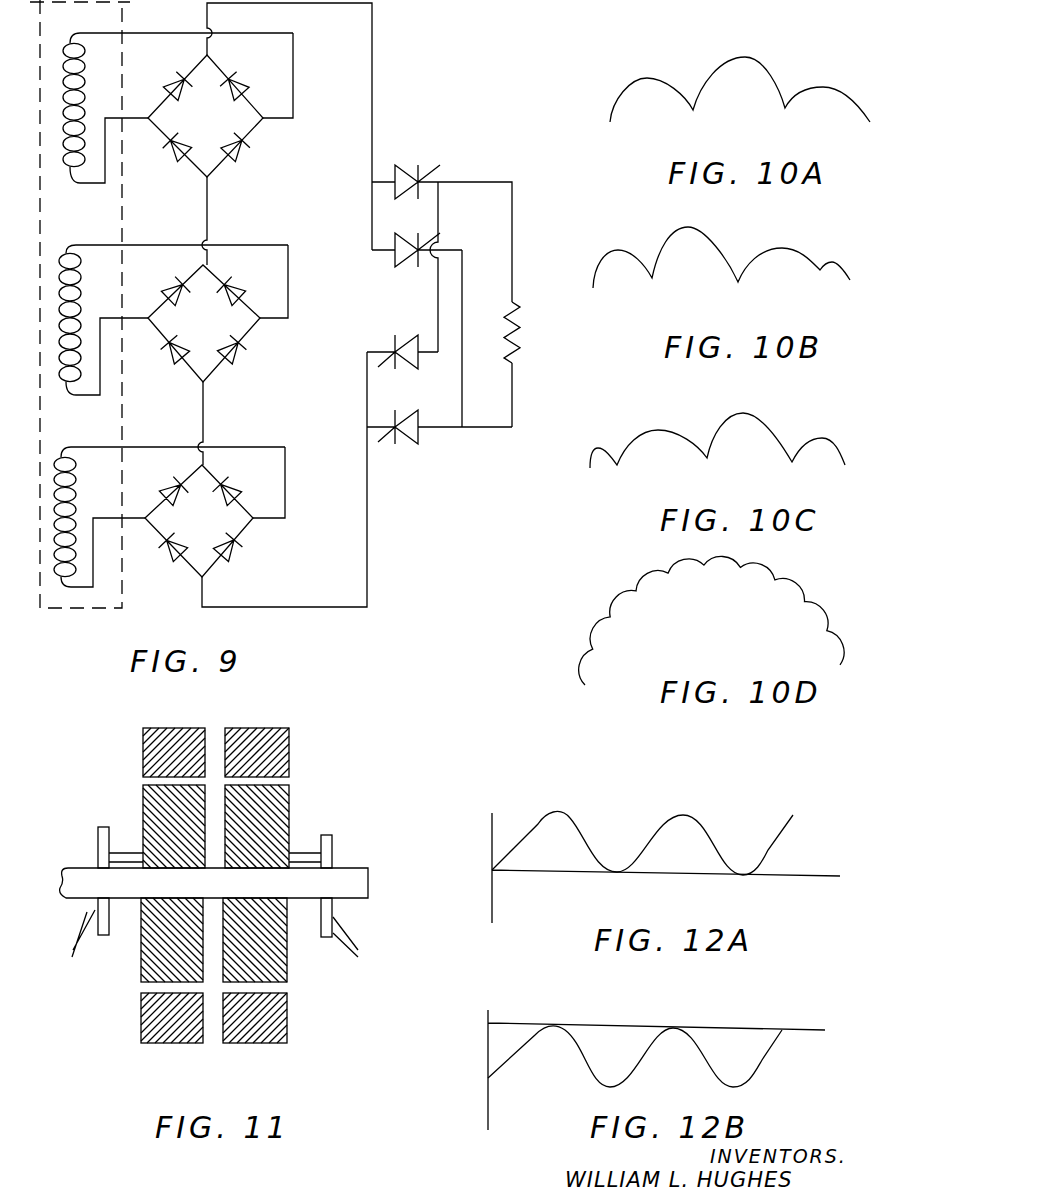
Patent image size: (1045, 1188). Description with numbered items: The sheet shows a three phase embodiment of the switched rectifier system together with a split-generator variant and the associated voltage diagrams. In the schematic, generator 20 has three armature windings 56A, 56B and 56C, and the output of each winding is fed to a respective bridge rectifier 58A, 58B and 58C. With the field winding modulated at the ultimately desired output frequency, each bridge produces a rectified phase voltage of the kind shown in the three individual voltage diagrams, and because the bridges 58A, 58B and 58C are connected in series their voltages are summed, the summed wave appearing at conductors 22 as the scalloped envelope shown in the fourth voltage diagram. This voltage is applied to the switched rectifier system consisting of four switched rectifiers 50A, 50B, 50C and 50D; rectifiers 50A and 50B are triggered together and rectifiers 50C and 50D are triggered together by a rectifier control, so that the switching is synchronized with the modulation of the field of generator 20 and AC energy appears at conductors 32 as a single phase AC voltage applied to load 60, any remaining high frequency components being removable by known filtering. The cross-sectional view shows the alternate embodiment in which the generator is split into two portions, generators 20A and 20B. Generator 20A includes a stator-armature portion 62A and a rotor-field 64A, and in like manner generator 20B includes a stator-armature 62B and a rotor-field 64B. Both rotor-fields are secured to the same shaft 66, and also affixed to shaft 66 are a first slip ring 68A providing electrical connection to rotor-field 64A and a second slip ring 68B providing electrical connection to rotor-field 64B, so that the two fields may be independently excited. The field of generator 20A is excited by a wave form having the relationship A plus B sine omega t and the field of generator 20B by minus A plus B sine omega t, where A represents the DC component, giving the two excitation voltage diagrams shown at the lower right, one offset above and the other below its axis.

In FIG. 9, the generator 20 is at (93, 605).
In FIG. 9, the conductors 22 is at (377, 73).
In FIG. 9, the conductors 32 is at (487, 182).
In FIG. 9, the switched rectifier 50A is at (400, 190).
In FIG. 9, the switched rectifier 50B is at (400, 258).
In FIG. 9, the switched rectifier 50C is at (418, 360).
In FIG. 9, the switched rectifier 50D is at (405, 438).
In FIG. 9, the armature winding 56A is at (83, 77).
In FIG. 9, the armature winding 56B is at (80, 290).
In FIG. 9, the armature winding 56C is at (80, 490).
In FIG. 9, the bridge rectifier 58A is at (266, 81).
In FIG. 9, the bridge rectifier 58B is at (258, 341).
In FIG. 9, the bridge rectifier 58C is at (243, 544).
In FIG. 9, the load 60 is at (522, 349).
In FIG. 11, the generator 20A is at (130, 863).
In FIG. 11, the generator 20B is at (303, 861).
In FIG. 11, the stator-armature portion 62A is at (143, 748).
In FIG. 11, the stator-armature 62B is at (290, 758).
In FIG. 11, the rotor-field 64A is at (143, 807).
In FIG. 11, the rotor-field 64B is at (290, 817).
In FIG. 11, the shaft 66 is at (82, 885).
In FIG. 11, the first slip ring 68A is at (103, 940).
In FIG. 11, the second slip ring 68B is at (337, 910).